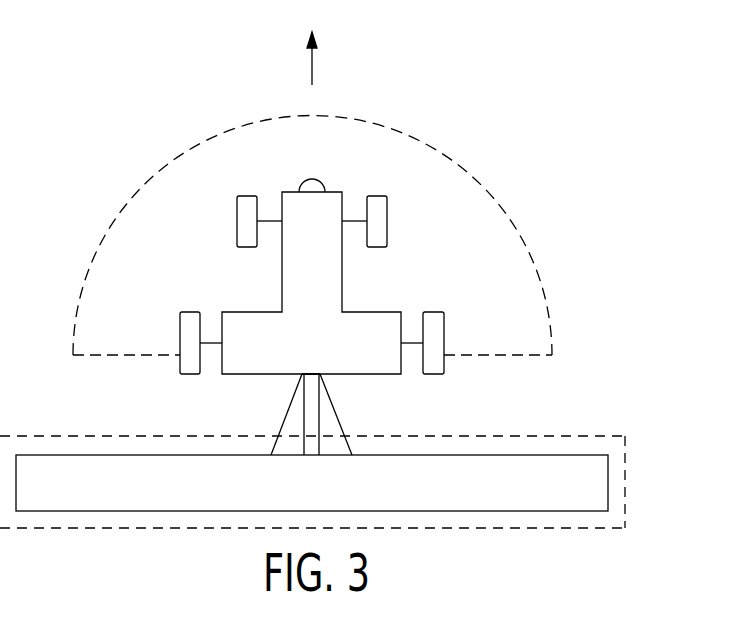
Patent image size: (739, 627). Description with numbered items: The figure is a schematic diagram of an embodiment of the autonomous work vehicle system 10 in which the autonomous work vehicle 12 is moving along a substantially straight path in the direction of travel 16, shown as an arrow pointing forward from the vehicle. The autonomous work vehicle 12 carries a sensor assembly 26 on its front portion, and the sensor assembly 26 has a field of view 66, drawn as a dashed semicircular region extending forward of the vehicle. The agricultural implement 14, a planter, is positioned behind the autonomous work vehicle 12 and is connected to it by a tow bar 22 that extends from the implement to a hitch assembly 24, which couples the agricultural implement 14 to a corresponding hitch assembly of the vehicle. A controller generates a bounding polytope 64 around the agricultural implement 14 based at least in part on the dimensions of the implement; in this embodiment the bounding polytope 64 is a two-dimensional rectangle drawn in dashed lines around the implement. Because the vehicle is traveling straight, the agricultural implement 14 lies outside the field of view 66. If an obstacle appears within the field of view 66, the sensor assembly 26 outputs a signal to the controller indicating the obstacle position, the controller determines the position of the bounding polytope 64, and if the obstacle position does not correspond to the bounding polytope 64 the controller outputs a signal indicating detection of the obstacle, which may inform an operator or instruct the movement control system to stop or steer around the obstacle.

The autonomous work vehicle system 10 is at (117, 155).
The autonomous work vehicle 12 is at (320, 207).
The agricultural implement 14 is at (76, 497).
The direction of travel 16 is at (312, 60).
The tow bar 22 is at (313, 408).
The hitch assembly 24 is at (311, 374).
The sensor assembly 26 is at (302, 183).
The bounding polytope 64 is at (625, 478).
The field of view 66 is at (448, 162).